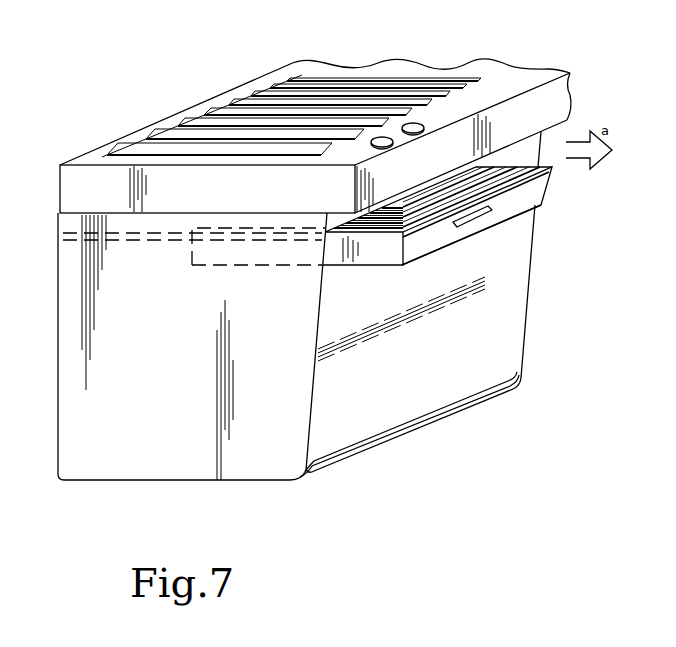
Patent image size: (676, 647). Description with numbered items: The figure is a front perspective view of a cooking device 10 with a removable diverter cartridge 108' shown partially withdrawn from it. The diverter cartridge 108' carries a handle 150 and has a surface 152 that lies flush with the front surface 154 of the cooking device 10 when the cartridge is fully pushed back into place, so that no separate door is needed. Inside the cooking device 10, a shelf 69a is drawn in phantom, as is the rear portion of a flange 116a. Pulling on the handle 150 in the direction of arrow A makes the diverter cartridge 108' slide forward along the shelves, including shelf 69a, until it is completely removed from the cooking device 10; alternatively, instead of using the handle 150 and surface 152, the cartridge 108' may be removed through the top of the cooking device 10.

The cooking device 10 is at (147, 97).
The shelf 69a is at (66, 246).
The flange 116a is at (236, 232).
The diverter cartridge 108' is at (459, 216).
The handle 150 is at (477, 224).
The surface 152 is at (415, 260).
The front surface 154 is at (383, 434).